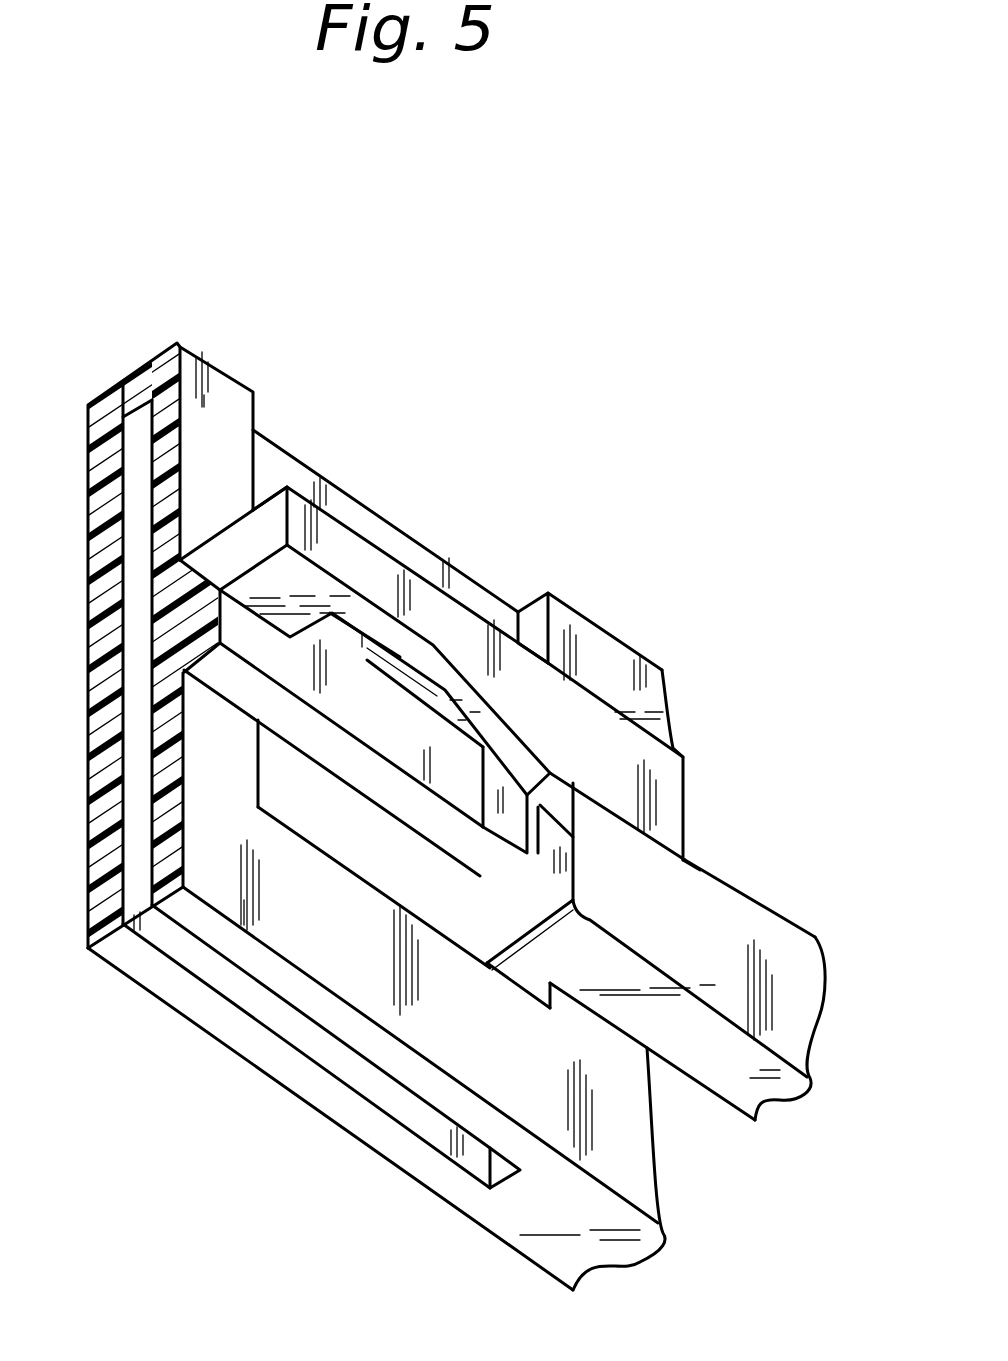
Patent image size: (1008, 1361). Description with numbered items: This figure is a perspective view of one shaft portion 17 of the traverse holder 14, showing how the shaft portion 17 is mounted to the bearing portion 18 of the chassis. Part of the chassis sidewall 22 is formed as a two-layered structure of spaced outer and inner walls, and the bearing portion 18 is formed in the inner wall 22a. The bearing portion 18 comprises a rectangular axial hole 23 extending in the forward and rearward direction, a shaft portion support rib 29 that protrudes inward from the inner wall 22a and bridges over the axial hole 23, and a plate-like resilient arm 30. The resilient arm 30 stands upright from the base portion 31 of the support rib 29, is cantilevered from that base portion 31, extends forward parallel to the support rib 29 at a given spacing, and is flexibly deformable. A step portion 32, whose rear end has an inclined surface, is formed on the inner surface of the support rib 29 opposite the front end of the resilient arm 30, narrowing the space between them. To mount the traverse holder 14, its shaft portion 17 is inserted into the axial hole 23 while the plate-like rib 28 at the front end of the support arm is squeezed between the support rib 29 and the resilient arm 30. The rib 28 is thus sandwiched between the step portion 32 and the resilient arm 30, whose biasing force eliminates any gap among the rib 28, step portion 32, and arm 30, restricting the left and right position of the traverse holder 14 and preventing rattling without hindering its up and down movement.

The traverse holder 14 is at (803, 918).
The shaft portion 17 is at (520, 963).
The bearing portion 18 is at (483, 558).
The sidewall 22 is at (543, 1113).
The inner wall 22a is at (125, 965).
The axial hole 23 is at (320, 815).
The plate-like rib 28 is at (713, 873).
The shaft portion support rib 29 is at (300, 665).
The resilient arm 30 is at (610, 733).
The base portion 31 is at (292, 568).
The step portion 32 is at (452, 937).